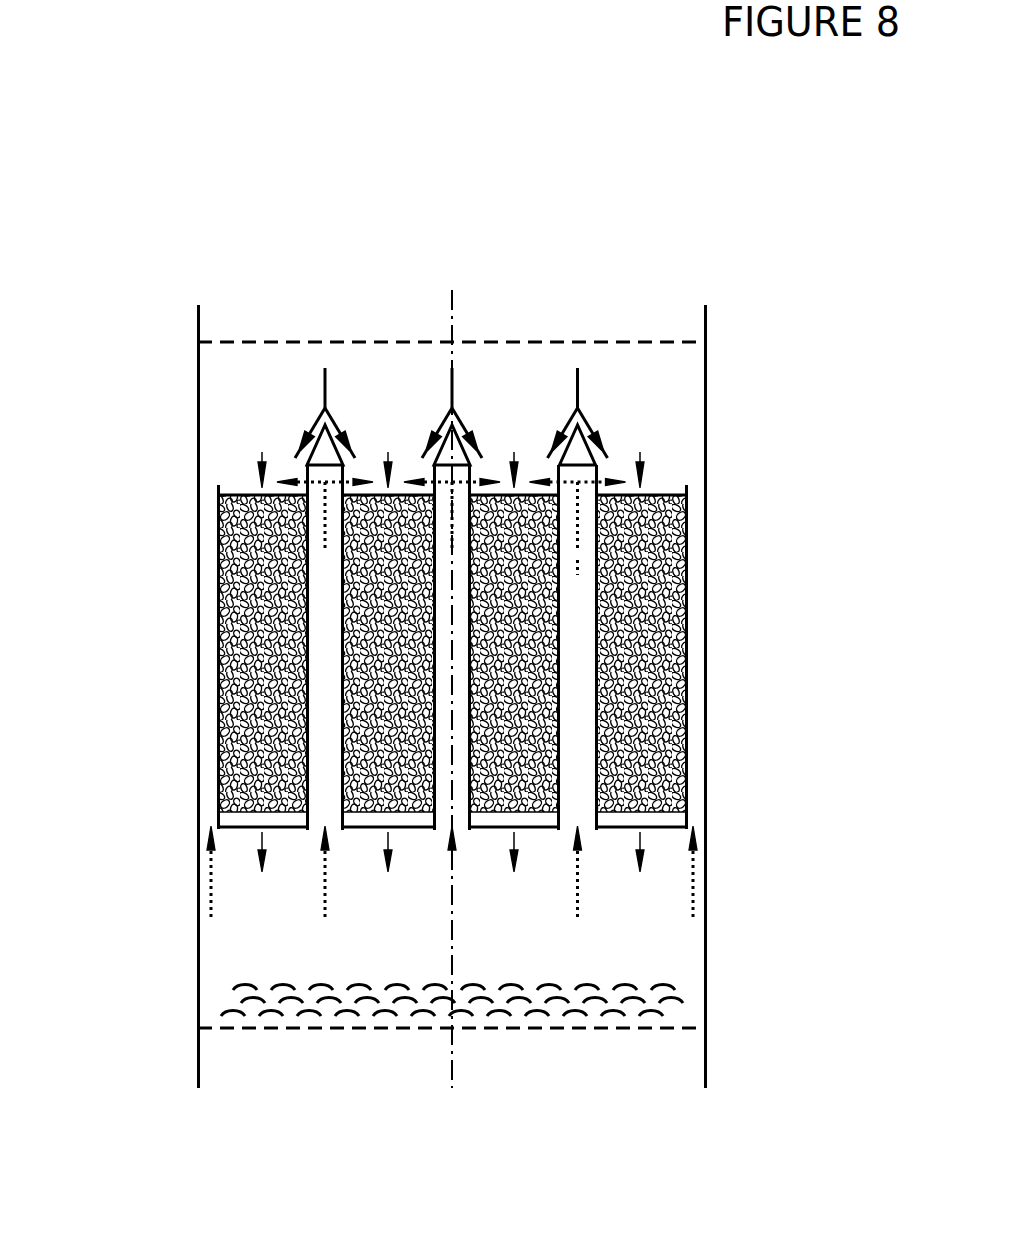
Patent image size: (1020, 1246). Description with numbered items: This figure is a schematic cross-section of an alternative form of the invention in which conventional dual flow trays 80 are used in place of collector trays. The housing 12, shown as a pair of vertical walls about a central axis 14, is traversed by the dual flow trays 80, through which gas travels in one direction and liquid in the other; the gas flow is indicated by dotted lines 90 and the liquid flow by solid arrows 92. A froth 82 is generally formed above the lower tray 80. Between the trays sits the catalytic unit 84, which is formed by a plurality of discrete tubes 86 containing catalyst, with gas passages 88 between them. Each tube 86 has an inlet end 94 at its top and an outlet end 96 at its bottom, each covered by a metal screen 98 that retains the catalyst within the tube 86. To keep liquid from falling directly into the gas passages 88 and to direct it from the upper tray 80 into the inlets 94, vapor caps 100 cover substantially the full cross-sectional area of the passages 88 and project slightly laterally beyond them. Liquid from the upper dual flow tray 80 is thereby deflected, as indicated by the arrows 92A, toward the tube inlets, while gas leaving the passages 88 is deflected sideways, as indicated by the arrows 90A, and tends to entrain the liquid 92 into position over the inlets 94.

The housing 12 is at (495, 696).
The column centerline 14 is at (490, 689).
The dual flow tray 80 is at (457, 678).
The froth 82 is at (381, 1005).
The catalytic unit 84 is at (361, 654).
The tube 86 is at (450, 598).
The gas passage 88 is at (434, 666).
The gas flow 90 is at (260, 907).
The deflected gas flow 90A is at (576, 607).
The liquid flow 92 is at (435, 646).
The deflected liquid flow 92A is at (449, 417).
The inlet end 94 is at (450, 478).
The outlet end 96 is at (398, 844).
The metal screen 98 is at (378, 855).
The vapor cap 100 is at (564, 404).